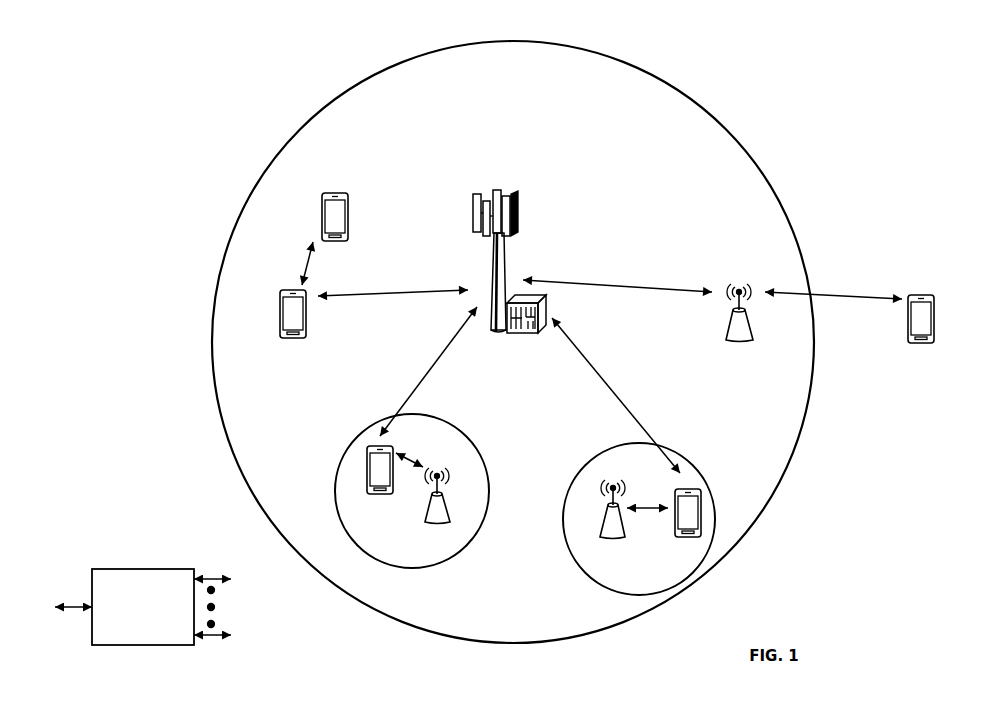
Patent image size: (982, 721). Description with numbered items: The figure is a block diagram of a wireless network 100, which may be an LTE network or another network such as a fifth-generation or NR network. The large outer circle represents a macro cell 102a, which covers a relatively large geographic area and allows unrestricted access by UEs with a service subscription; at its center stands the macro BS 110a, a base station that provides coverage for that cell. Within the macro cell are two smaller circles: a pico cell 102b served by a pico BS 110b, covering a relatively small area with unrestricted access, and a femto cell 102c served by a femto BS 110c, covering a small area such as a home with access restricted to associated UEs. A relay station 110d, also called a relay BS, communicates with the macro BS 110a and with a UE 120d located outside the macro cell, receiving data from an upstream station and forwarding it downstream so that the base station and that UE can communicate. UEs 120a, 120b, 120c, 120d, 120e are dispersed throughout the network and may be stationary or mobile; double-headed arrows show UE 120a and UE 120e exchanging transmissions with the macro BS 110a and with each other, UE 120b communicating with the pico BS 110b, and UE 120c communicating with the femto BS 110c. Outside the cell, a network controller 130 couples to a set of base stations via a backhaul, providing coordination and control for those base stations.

The wireless network 100 is at (130, 39).
The macro cell 102a is at (711, 113).
The pico cell 102b is at (476, 447).
The femto cell 102c is at (596, 456).
The macro BS 110a is at (500, 188).
The pico BS 110b is at (451, 513).
The femto BS 110c is at (603, 523).
The relay station 110d is at (740, 288).
The UE 120a is at (280, 310).
The UE 120b is at (373, 495).
The UE 120c is at (677, 539).
The UE 120d is at (917, 295).
The UE 120e is at (322, 202).
The network controller 130 is at (141, 569).